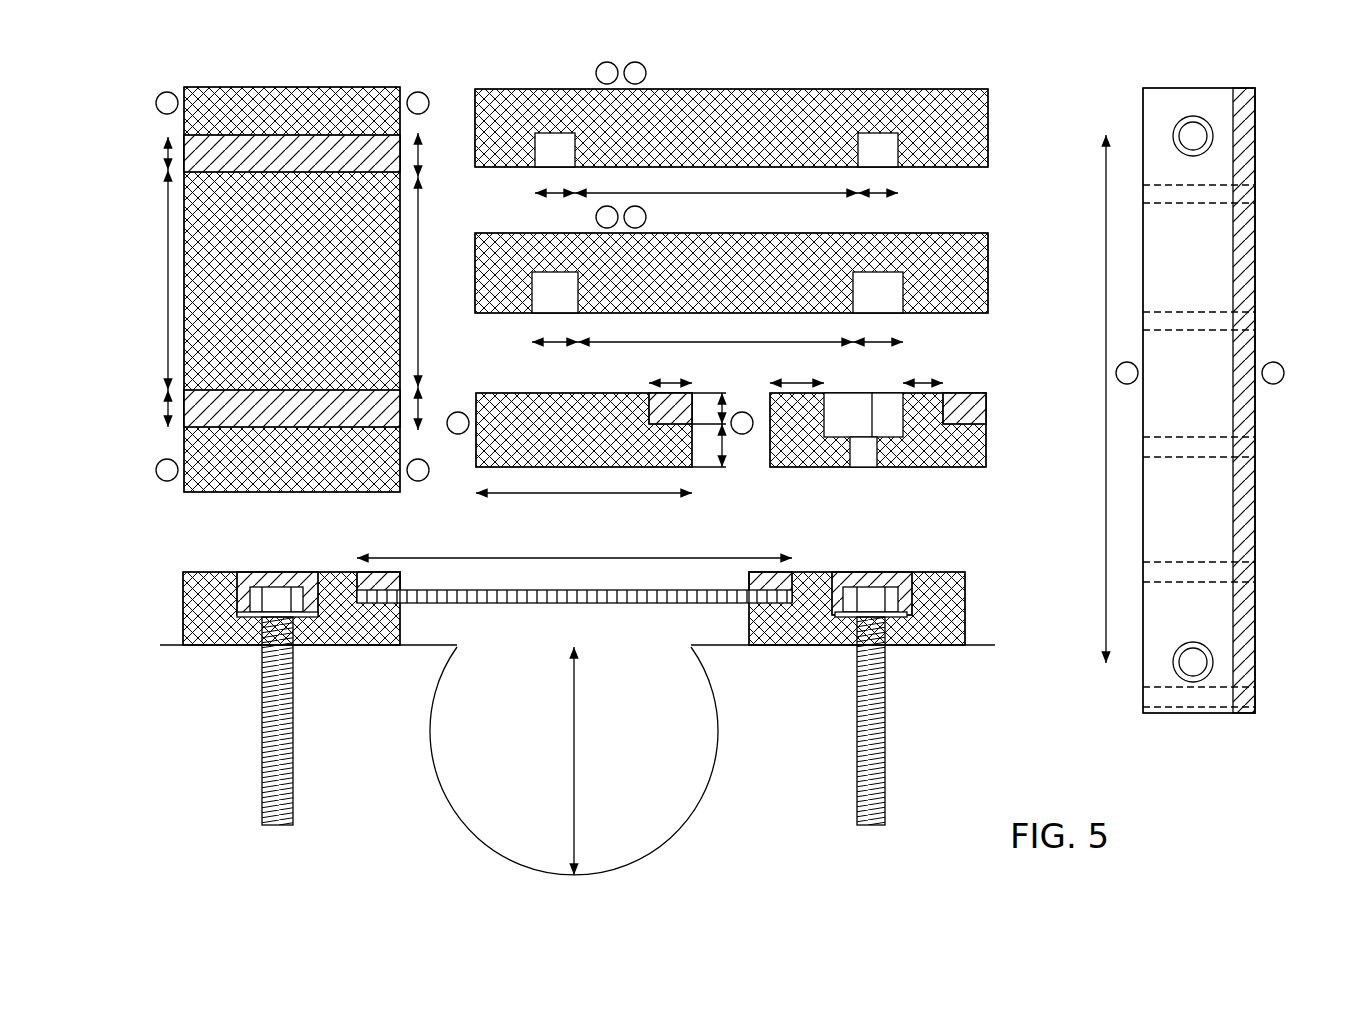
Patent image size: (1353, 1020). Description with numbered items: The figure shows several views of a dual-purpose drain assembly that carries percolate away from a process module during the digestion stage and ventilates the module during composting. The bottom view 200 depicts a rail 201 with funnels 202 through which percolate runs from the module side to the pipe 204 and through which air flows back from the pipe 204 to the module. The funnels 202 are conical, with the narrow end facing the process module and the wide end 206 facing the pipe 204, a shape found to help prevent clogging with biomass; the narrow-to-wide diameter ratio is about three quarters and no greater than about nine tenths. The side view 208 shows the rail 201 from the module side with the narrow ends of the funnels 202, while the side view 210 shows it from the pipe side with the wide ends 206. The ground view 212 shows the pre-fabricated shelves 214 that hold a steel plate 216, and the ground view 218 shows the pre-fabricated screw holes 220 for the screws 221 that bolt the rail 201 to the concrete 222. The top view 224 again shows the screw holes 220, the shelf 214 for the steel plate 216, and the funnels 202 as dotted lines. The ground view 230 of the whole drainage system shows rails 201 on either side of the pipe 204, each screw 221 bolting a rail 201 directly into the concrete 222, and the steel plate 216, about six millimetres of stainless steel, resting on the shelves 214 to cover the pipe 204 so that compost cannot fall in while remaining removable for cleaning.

The bottom view of rail 200 is at (130, 135).
The rail 201 is at (263, 102).
The funnel 202 is at (303, 127).
The pipe 204 is at (193, 163).
The wide end 206 is at (372, 143).
The side view of rail from process module side 208 is at (1005, 128).
The side view of rail from pipe side 210 is at (1005, 240).
The ground view of rail showing shelves 212 is at (516, 384).
The shelf 214 is at (652, 406).
The steel plate 216 is at (512, 605).
The ground view of rail showing screw holes 218 is at (1006, 393).
The screw hole 220 is at (858, 397).
The screw 221 is at (262, 735).
The concrete 222 is at (806, 750).
The top view of rail 224 is at (1272, 88).
The ground view of drainage system 230 is at (152, 586).